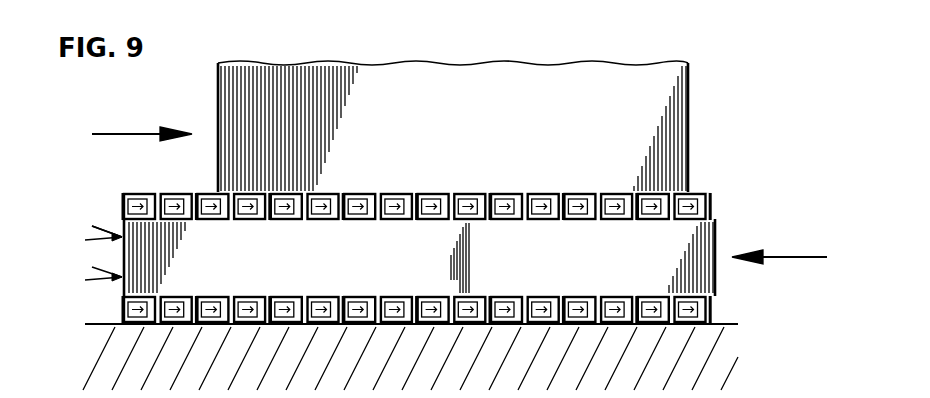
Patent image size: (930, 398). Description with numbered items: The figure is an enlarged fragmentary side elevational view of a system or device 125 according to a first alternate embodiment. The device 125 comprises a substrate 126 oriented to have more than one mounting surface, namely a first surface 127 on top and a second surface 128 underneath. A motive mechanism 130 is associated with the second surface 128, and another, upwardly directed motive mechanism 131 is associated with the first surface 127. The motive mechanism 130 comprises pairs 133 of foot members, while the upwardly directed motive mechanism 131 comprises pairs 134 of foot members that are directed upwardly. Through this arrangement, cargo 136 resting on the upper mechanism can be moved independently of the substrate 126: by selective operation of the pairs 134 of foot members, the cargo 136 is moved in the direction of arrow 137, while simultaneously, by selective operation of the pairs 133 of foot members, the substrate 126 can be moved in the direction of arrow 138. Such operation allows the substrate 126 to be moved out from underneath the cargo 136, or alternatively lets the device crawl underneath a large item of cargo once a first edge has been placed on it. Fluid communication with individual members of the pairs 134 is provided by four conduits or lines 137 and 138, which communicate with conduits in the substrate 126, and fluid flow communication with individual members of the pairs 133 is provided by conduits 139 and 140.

The system or device 125 is at (704, 174).
The substrate 126 is at (700, 242).
The first surface 127 is at (707, 223).
The second surface 128 is at (710, 296).
The motive mechanism 130 is at (119, 307).
The motive mechanism 131 is at (121, 207).
The pairs of foot members 133 is at (143, 291).
The pairs of foot members 134 is at (147, 227).
The cargo 136 is at (681, 96).
The arrow 137 is at (115, 133).
The arrow 138 is at (794, 252).
The conduit 139 is at (103, 247).
The conduit 140 is at (96, 281).